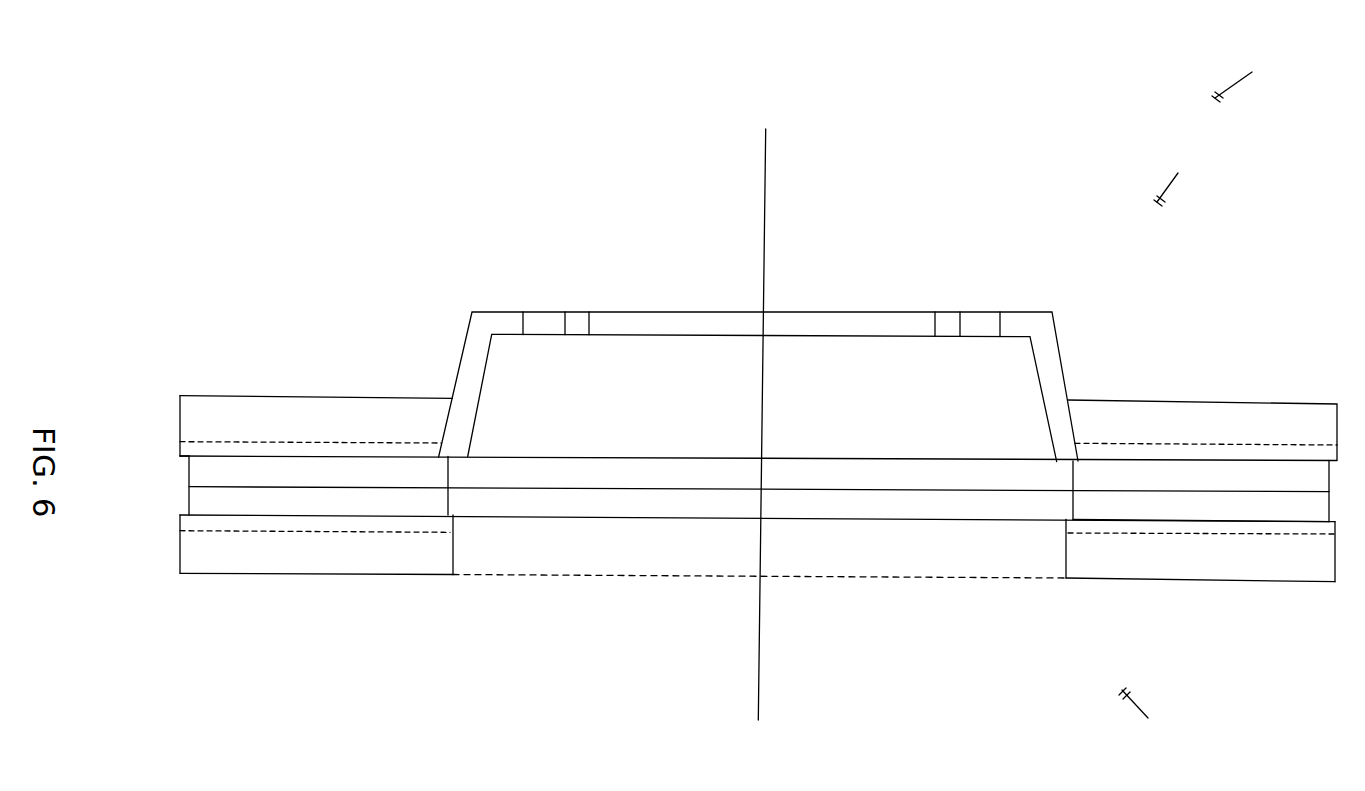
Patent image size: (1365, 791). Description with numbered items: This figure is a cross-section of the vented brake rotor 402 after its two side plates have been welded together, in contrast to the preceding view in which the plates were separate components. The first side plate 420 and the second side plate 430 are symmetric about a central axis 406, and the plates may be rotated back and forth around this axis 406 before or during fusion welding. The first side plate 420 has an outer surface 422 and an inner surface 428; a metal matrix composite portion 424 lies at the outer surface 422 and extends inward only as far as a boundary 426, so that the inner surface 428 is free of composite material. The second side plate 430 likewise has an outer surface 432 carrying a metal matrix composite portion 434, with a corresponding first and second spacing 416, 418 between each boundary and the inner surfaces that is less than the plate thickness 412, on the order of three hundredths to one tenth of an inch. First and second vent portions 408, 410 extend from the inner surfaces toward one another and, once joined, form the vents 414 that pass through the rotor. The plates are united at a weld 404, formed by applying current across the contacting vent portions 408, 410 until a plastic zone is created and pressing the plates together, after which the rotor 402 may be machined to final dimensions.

The top layer 402 is at (872, 312).
The top layer segments 404 is at (543, 313).
The central axis 406 is at (762, 652).
The lower intermediate layer 408 is at (922, 503).
The upper intermediate layer 410 is at (923, 473).
The direction indicator 412 is at (1143, 717).
The intermediate interface 414 is at (828, 490).
The bottom layer interface 416 is at (385, 532).
The bottom block 418 is at (245, 553).
The bottom surface 420 is at (313, 575).
The left block interface 422 is at (387, 442).
The left block top surface 424 is at (325, 398).
The left block 426 is at (257, 422).
The right intermediate portion 428 is at (1160, 520).
The direction indicator 430 is at (1175, 176).
The right block 432 is at (1213, 463).
The direction indicator 434 is at (1240, 72).